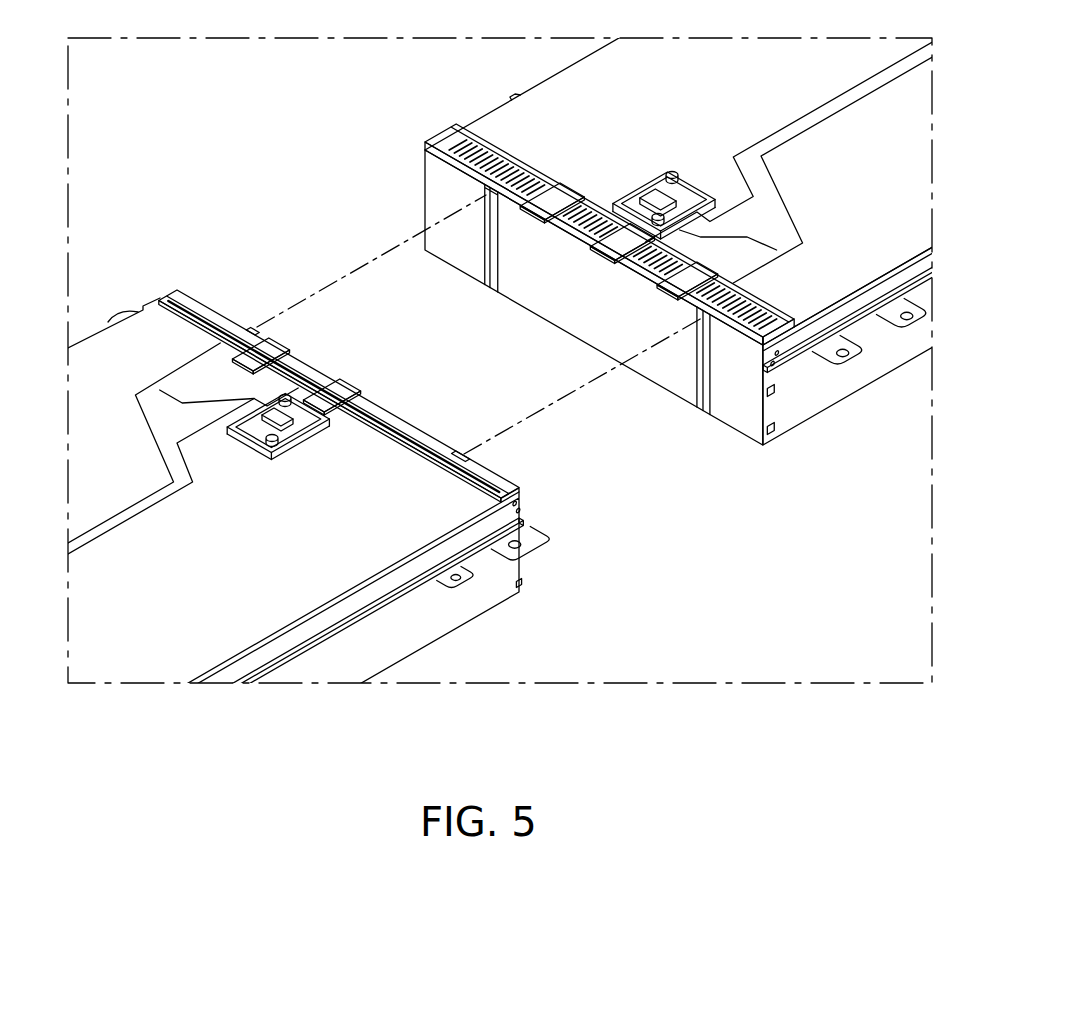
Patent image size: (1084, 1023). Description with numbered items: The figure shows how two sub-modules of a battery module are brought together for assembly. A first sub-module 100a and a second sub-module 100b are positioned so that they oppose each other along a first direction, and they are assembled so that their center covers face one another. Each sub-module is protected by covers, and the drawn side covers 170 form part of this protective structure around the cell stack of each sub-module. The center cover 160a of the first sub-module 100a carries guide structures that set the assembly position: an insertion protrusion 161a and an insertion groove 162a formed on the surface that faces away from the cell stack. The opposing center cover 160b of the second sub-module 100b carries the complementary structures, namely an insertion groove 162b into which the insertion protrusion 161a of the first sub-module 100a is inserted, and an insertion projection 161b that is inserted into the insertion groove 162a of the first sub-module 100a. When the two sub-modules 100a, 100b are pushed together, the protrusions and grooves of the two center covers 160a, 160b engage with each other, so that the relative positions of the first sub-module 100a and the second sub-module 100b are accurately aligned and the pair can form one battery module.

The first sub-module 100a is at (144, 292).
The second sub-module 100b is at (431, 137).
The center cover of the first sub-module 160a is at (193, 300).
The center cover of the second sub-module 160b is at (740, 420).
The insertion protrusion 161a is at (257, 326).
The insertion projection 161b is at (702, 403).
The insertion groove 162a is at (462, 452).
The insertion groove 162b is at (483, 265).
The side cover 170 is at (840, 390).